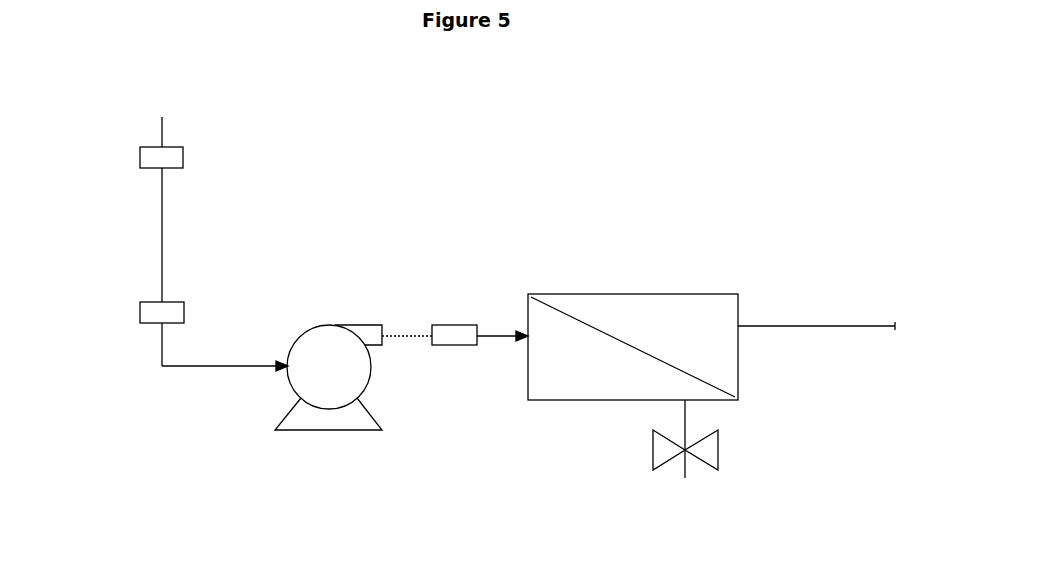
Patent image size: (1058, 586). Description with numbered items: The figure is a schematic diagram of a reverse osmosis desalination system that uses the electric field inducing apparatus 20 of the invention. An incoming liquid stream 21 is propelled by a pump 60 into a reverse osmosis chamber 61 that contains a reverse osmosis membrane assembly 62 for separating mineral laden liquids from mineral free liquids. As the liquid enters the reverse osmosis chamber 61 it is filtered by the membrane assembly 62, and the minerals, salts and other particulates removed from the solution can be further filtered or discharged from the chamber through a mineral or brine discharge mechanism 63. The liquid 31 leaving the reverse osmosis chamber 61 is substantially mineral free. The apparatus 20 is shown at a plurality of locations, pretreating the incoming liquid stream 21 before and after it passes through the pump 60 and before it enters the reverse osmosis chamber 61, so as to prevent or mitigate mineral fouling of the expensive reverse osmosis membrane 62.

The electric field inducing apparatus 20 is at (143, 164).
The incoming liquid stream 21 is at (156, 118).
The liquid 31 is at (835, 325).
The pump 60 is at (335, 323).
The reverse osmosis chamber 61 is at (617, 286).
The reverse osmosis membrane assembly 62 is at (633, 357).
The mineral or brine discharge mechanism 63 is at (685, 464).